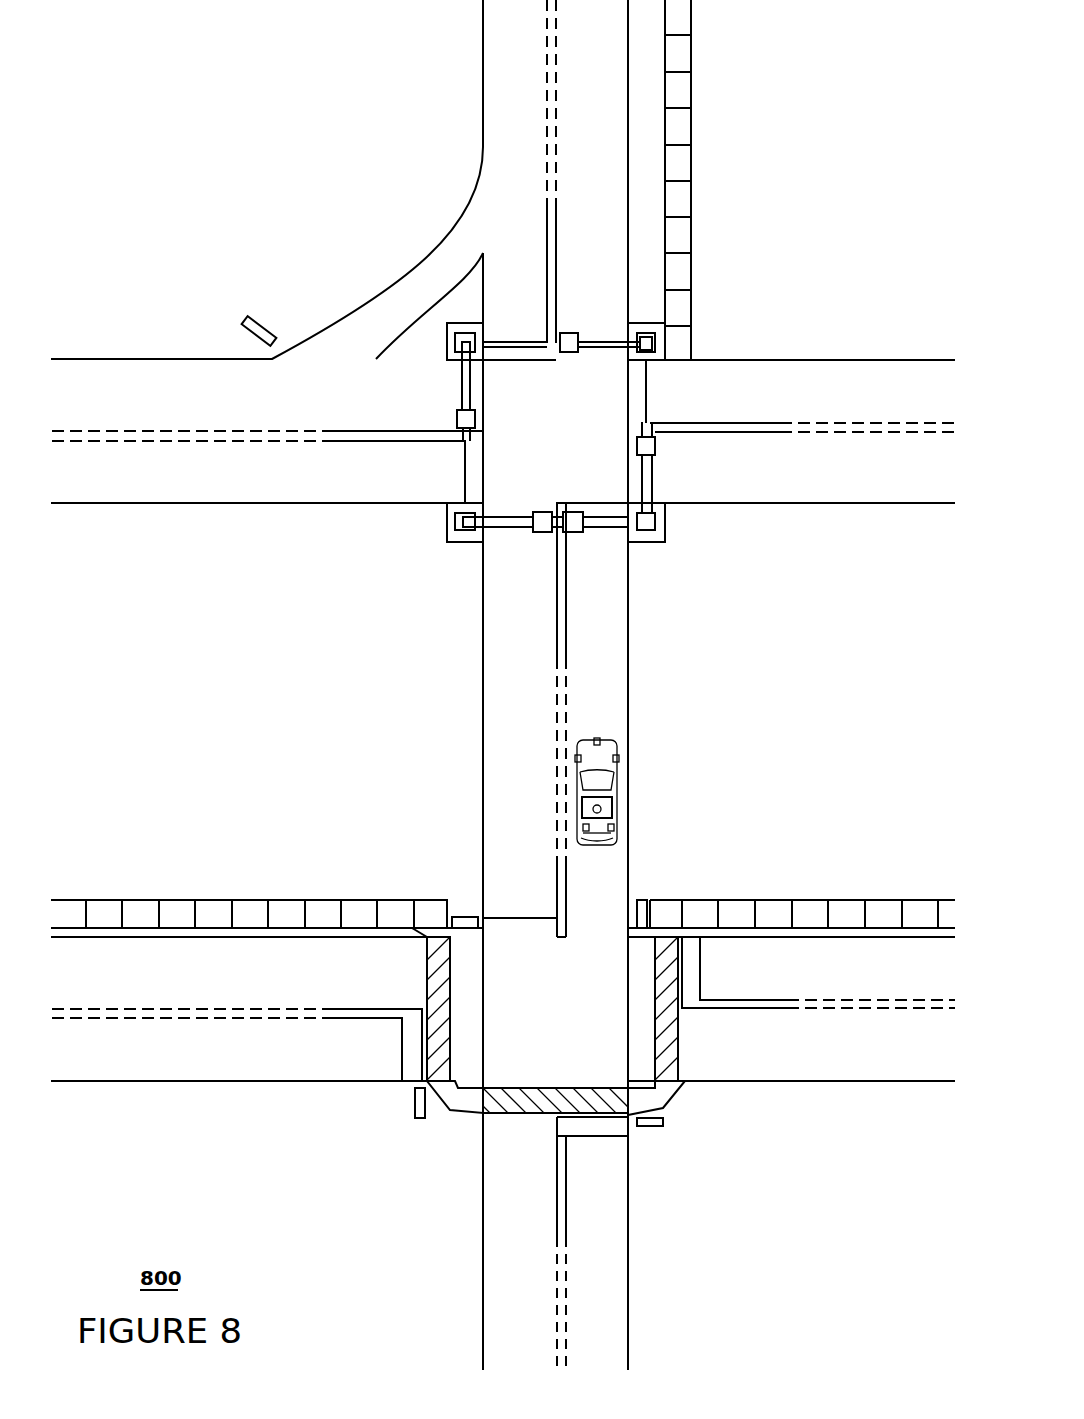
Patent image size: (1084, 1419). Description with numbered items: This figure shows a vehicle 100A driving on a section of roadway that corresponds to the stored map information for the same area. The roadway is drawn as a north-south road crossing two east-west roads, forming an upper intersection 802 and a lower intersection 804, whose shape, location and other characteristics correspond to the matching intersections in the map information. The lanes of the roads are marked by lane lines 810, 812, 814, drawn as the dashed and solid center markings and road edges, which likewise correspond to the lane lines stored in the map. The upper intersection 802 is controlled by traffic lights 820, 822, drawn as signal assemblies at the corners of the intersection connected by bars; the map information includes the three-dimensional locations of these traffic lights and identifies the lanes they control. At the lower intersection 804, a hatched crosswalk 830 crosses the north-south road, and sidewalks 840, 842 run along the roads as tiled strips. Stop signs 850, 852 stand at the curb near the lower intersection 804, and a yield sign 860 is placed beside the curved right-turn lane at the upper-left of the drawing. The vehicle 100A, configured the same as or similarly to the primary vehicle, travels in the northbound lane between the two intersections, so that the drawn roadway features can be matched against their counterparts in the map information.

The intersection 802 is at (556, 432).
The intersection 804 is at (556, 1026).
The lane line 810 is at (128, 1018).
The lane line 812 is at (208, 1081).
The lane line 814 is at (557, 108).
The traffic light 820 is at (580, 334).
The traffic light 822 is at (455, 414).
The crosswalk 830 is at (483, 1099).
The sidewalk 840 is at (728, 900).
The sidewalk 842 is at (691, 181).
The stop sign 850 is at (465, 917).
The stop sign 852 is at (663, 1122).
The yield sign 860 is at (240, 326).
The vehicle 100A is at (617, 788).